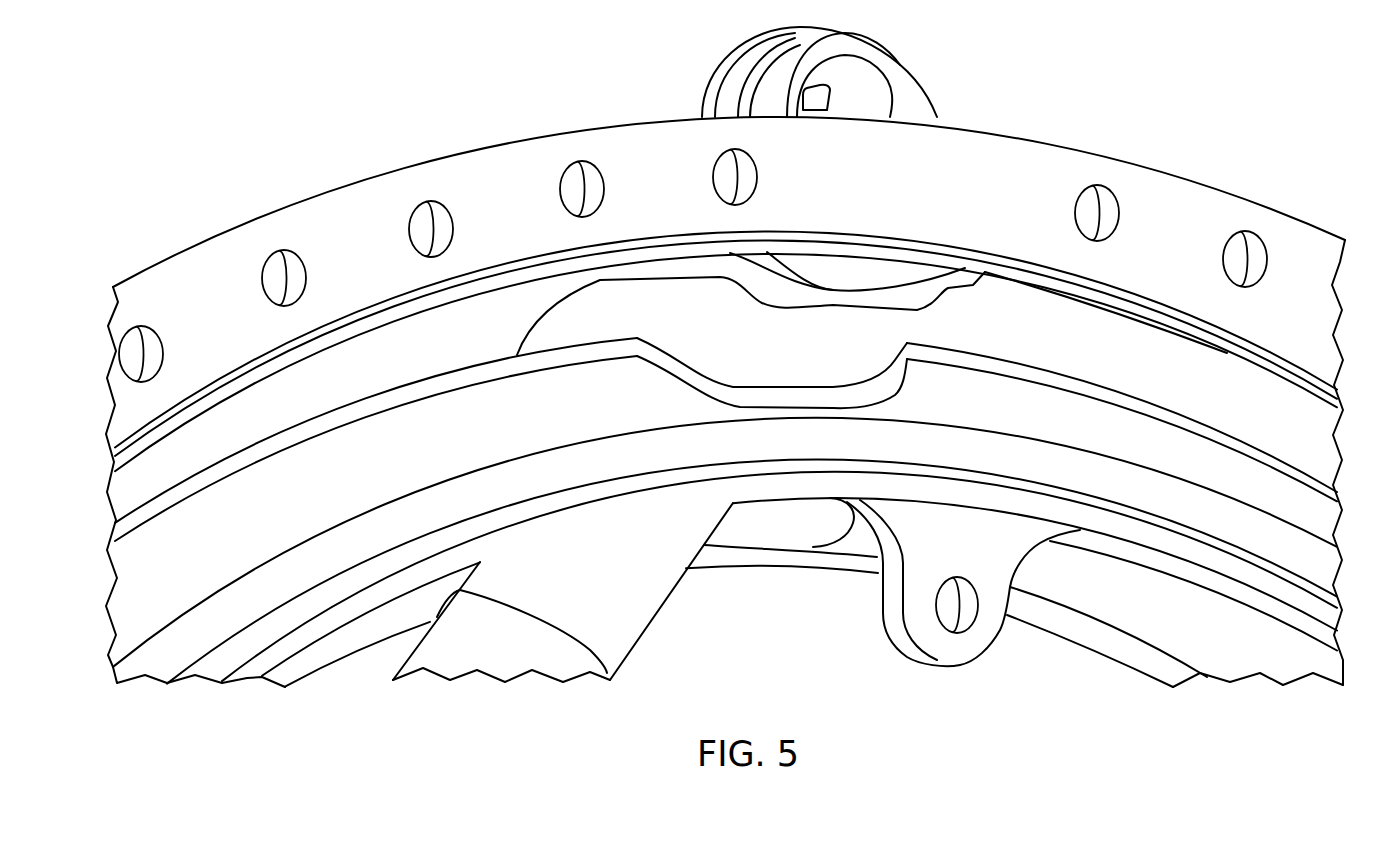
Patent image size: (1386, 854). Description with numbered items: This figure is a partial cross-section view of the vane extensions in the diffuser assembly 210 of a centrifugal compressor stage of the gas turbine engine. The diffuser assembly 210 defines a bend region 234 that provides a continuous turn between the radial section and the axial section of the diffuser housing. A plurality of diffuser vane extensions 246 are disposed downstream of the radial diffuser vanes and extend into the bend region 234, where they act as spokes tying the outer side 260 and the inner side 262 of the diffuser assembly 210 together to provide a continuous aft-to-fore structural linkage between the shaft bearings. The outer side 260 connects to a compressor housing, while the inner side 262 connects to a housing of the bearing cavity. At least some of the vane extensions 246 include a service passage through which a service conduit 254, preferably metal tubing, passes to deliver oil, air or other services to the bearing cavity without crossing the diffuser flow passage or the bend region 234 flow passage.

The diffuser assembly 210 is at (1243, 153).
The bend region 234 is at (1103, 318).
The diffuser vane extension 246 is at (903, 334).
The service conduit 254 is at (653, 607).
The outer side 260 is at (722, 258).
The inner side 262 is at (505, 480).